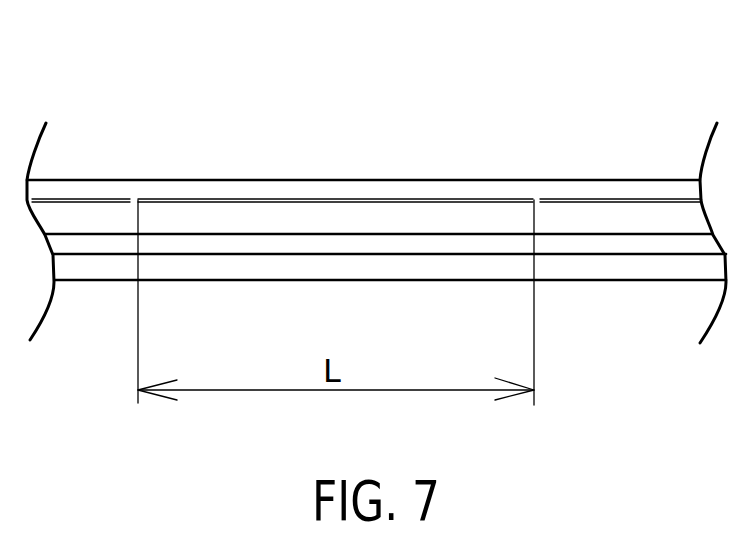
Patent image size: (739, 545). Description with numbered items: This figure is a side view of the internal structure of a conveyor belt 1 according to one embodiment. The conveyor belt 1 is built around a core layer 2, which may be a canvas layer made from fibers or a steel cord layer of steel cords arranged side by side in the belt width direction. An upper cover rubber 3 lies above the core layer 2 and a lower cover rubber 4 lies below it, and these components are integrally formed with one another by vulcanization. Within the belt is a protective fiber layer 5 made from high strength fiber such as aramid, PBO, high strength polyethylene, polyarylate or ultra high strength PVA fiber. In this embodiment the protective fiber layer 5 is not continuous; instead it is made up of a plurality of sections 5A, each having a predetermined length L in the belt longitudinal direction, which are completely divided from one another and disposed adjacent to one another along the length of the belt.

The conveyor belt 1 is at (376, 209).
The core layer 2 is at (386, 252).
The upper cover rubber 3 is at (228, 188).
The lower cover rubber 4 is at (583, 272).
The protective fiber layer 5 is at (432, 202).
The sections 5A is at (77, 202).